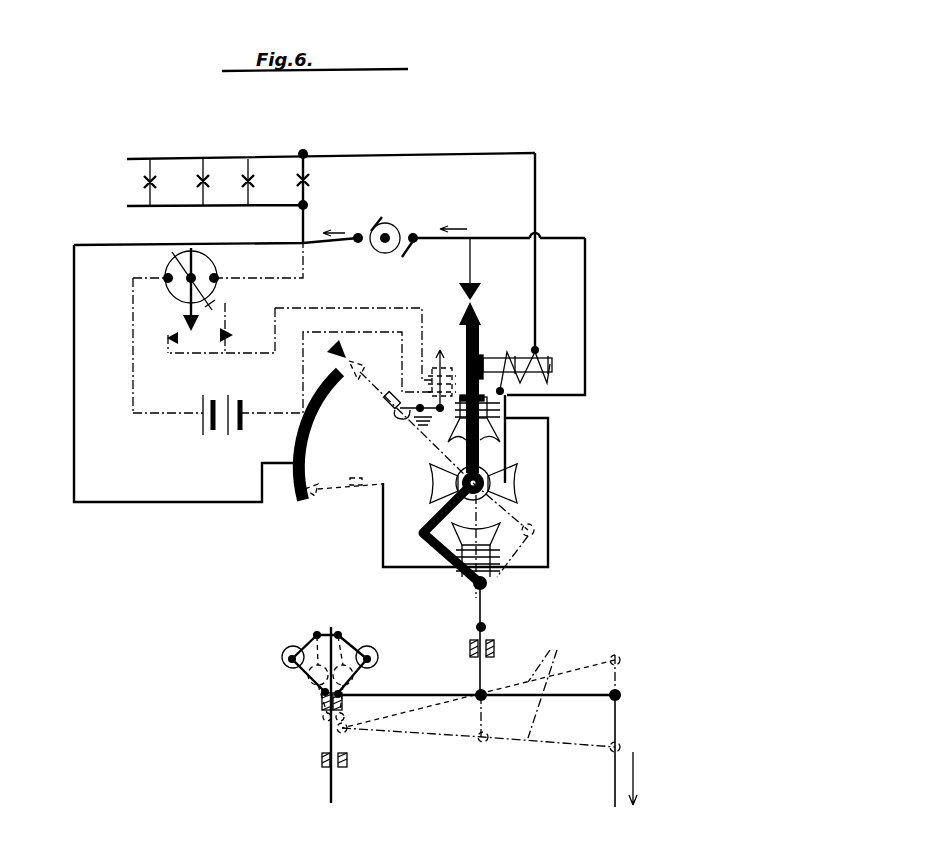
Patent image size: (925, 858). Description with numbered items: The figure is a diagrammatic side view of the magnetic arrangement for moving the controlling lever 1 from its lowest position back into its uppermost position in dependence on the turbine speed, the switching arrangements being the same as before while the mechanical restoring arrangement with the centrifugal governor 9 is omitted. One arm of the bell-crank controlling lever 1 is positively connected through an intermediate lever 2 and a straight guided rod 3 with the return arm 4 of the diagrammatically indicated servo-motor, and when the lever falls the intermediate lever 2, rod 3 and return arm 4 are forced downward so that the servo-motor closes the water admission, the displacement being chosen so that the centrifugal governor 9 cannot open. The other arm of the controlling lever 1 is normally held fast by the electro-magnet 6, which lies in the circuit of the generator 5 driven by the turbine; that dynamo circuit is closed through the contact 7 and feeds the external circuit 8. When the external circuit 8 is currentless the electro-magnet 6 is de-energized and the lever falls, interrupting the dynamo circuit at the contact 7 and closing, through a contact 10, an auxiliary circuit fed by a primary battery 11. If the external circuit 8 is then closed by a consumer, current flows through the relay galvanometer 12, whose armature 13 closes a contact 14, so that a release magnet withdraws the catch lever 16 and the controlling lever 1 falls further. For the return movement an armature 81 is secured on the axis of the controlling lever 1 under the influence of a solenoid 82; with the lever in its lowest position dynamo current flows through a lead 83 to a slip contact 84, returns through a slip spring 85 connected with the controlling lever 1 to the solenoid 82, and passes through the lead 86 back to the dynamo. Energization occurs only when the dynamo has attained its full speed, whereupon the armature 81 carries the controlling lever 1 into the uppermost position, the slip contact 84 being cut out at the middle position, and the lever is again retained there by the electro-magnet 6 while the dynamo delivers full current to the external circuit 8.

The controlling lever 1 is at (443, 533).
The intermediate lever 2 is at (445, 560).
The straight guided rod 3 is at (483, 605).
The return arm 4 is at (478, 292).
The generator 5 is at (383, 229).
The electro-magnet 6 is at (551, 363).
The contact 7 is at (487, 717).
The external circuit 8 is at (165, 194).
The centrifugal governor 9 is at (305, 675).
The contact 10 is at (463, 303).
The primary battery 11 is at (222, 436).
The relay galvanometer 12 is at (178, 287).
The armature 13 is at (205, 307).
The contact 14 is at (221, 333).
The catch lever 16 is at (393, 417).
The armature 81 is at (520, 482).
The solenoid 82 is at (500, 401).
The lead 83 is at (74, 398).
The slip contact 84 is at (300, 497).
The slip spring 85 is at (312, 494).
The lead 86 is at (585, 283).